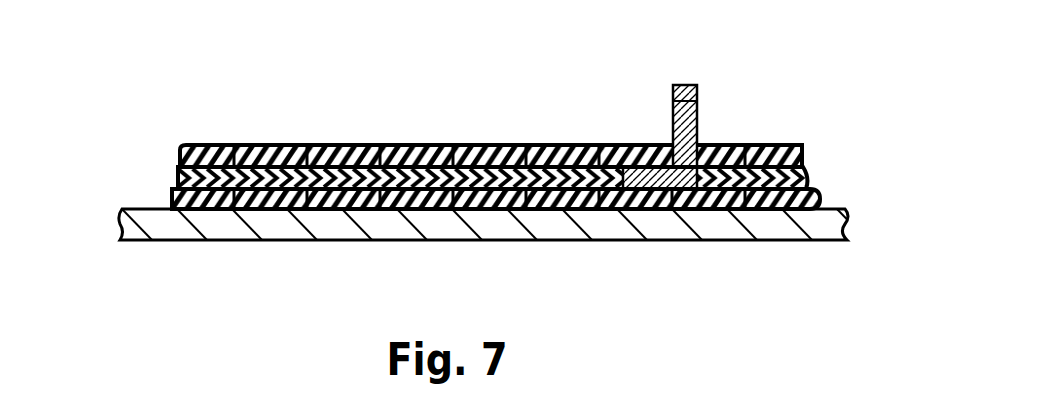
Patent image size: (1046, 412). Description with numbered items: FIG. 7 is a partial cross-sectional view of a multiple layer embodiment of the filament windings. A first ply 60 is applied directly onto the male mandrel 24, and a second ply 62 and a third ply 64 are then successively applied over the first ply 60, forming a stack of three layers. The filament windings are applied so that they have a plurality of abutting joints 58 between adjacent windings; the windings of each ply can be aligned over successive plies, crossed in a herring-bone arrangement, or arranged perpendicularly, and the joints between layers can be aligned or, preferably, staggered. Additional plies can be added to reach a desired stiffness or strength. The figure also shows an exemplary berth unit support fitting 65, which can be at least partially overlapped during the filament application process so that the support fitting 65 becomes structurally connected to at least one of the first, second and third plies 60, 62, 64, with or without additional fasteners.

The male mandrel 24 is at (157, 220).
The abutting joints 58 is at (515, 145).
The first ply 60 is at (817, 198).
The second ply 62 is at (800, 170).
The third ply 64 is at (785, 148).
The berth unit support fitting 65 is at (698, 118).